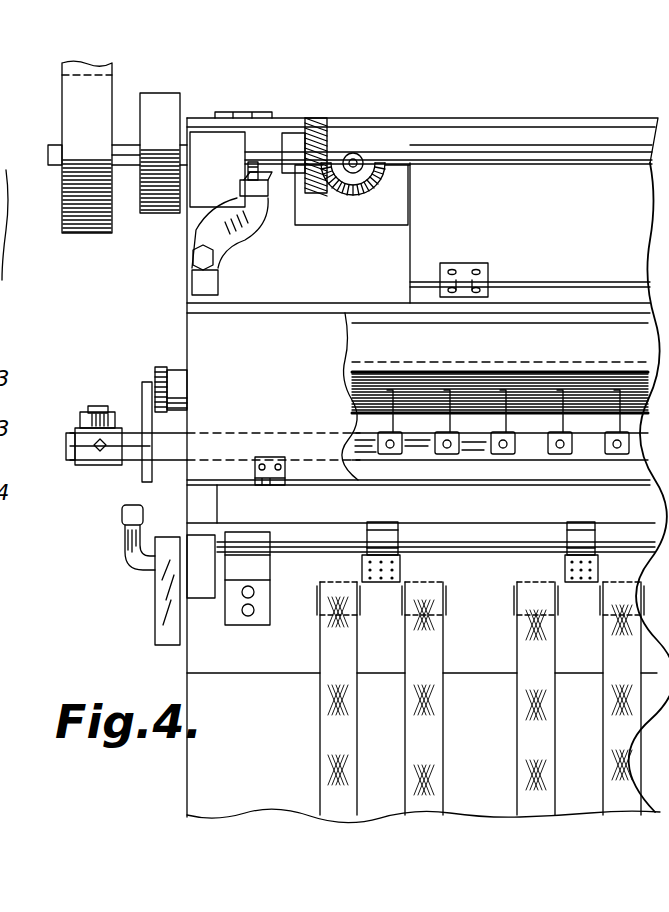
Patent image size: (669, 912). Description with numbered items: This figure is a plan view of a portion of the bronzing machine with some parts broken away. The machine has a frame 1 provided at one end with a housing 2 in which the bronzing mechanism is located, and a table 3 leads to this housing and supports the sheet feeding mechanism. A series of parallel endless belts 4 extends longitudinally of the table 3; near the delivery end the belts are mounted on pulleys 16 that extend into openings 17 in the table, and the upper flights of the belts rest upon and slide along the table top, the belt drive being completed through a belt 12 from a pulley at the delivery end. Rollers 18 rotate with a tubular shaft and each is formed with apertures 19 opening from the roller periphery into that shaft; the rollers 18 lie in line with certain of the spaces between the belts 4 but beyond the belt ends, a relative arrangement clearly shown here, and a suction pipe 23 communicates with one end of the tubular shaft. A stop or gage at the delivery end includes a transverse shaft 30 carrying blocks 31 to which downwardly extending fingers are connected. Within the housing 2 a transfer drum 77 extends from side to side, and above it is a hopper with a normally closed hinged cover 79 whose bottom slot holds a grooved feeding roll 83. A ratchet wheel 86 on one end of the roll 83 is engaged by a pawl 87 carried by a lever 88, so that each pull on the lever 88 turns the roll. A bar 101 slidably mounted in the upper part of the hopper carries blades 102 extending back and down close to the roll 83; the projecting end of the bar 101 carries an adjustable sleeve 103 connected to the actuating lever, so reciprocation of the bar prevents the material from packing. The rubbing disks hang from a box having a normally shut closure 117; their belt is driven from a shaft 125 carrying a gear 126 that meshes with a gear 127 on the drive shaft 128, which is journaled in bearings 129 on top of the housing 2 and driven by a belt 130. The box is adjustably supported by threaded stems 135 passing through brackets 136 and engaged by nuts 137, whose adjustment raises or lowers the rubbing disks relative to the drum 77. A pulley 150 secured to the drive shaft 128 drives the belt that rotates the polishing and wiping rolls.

The frame 1 is at (190, 495).
The housing 2 is at (428, 470).
The table 3 is at (200, 757).
The endless belts 4 is at (327, 733).
The belt 12 is at (160, 631).
The pulleys 16 is at (628, 583).
The openings 17 is at (517, 600).
The rollers 18 is at (362, 566).
The apertures 19 is at (385, 590).
The suction pipe 23 is at (125, 560).
The transverse shaft 30 is at (524, 540).
The blocks 31 is at (593, 540).
The transfer drum 77 is at (329, 514).
The hinged cover 79 is at (273, 399).
The feeding roll 83 is at (612, 385).
The ratchet wheel 86 is at (160, 365).
The pawl 87 is at (160, 390).
The lever 88 is at (145, 408).
The bar 101 is at (470, 452).
The blades 102 is at (445, 388).
The sleeve 103 is at (87, 468).
The closure 117 is at (530, 233).
The shaft 125 is at (357, 166).
The gear 126 is at (400, 185).
The gear 127 is at (318, 118).
The drive shaft 128 is at (533, 150).
The bearings 129 is at (203, 146).
The belt 130 is at (75, 93).
The threaded stems 135 is at (254, 168).
The brackets 136 is at (228, 235).
The nuts 137 is at (249, 178).
The pulley 150 is at (153, 100).